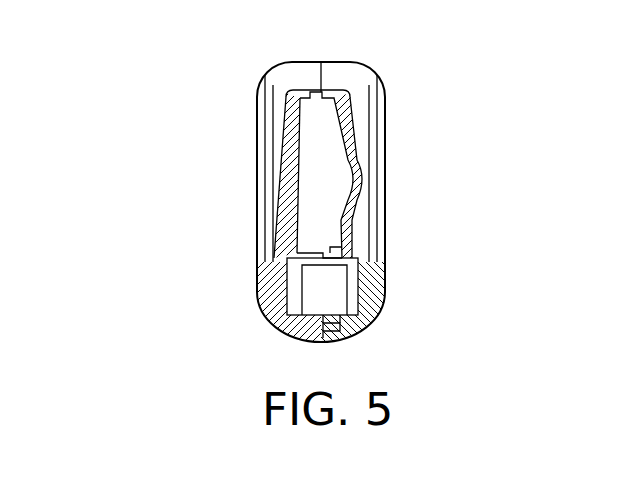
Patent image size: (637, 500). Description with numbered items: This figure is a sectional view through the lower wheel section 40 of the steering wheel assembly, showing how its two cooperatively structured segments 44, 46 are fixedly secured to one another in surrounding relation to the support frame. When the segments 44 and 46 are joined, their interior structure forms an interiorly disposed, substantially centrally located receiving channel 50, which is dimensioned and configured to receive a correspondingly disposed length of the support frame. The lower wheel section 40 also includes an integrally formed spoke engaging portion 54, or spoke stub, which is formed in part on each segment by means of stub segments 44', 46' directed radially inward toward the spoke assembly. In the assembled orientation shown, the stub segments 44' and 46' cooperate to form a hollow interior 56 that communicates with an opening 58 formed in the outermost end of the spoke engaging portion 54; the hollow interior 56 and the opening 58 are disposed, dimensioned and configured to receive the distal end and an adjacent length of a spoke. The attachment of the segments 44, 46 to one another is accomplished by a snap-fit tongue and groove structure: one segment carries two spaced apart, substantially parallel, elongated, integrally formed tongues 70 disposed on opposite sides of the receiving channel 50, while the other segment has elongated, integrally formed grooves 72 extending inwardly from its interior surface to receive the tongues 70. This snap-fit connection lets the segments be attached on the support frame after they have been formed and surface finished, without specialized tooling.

The lower wheel section 40 is at (477, 164).
The segment 44 is at (427, 168).
The stub segment 44' is at (421, 173).
The segment 46 is at (204, 168).
The stub segment 46' is at (219, 173).
The receiving channel 50 is at (332, 297).
The spoke engaging portion 54 is at (352, 124).
The hollow interior 56 is at (303, 229).
The opening 58 is at (313, 92).
The tongue 70 is at (323, 252).
The groove 72 is at (338, 251).